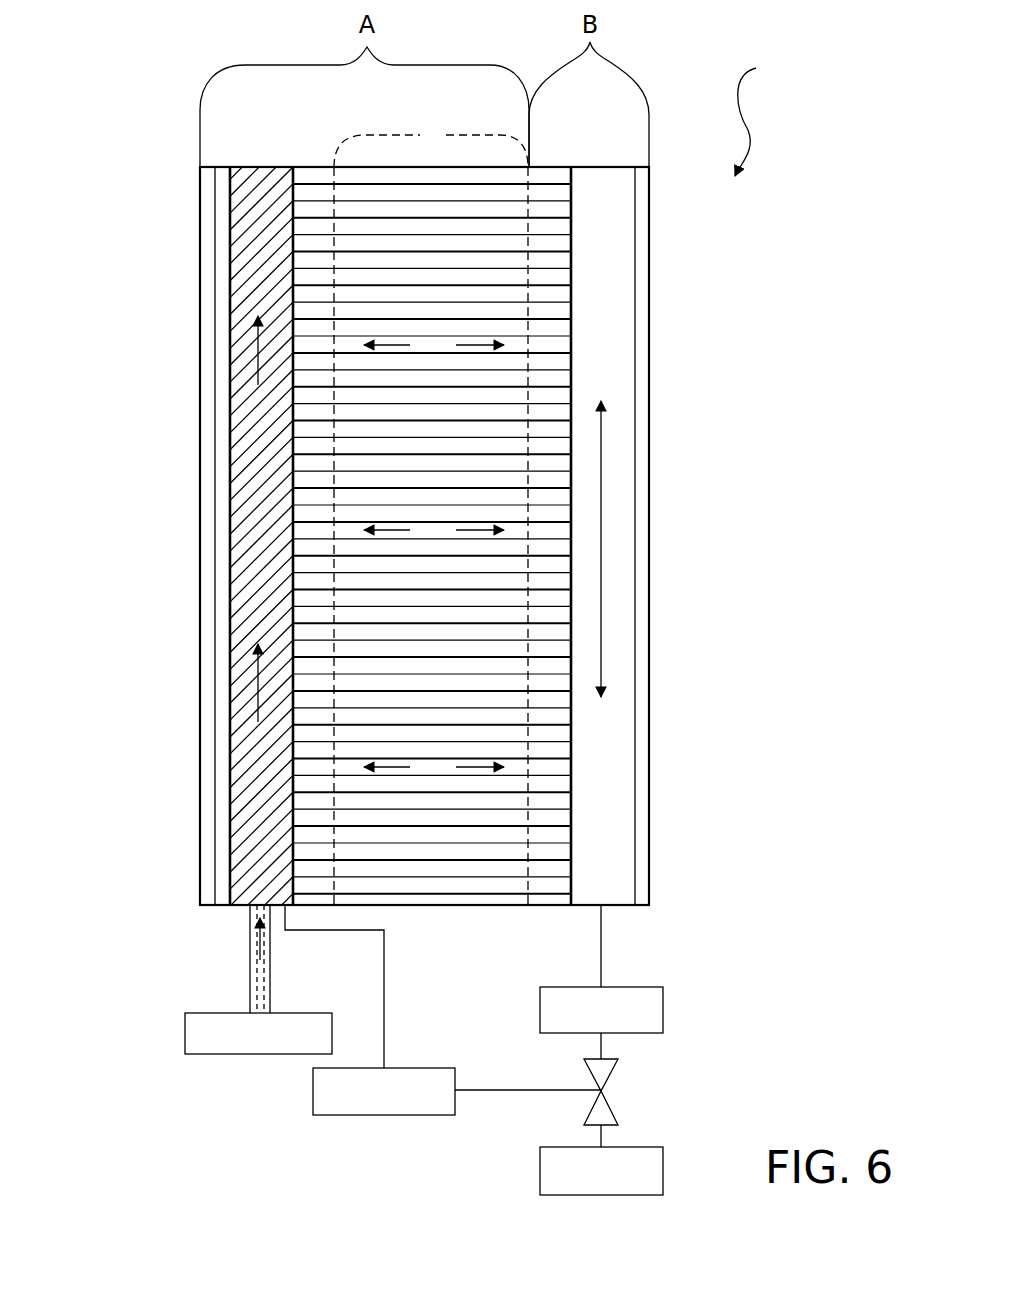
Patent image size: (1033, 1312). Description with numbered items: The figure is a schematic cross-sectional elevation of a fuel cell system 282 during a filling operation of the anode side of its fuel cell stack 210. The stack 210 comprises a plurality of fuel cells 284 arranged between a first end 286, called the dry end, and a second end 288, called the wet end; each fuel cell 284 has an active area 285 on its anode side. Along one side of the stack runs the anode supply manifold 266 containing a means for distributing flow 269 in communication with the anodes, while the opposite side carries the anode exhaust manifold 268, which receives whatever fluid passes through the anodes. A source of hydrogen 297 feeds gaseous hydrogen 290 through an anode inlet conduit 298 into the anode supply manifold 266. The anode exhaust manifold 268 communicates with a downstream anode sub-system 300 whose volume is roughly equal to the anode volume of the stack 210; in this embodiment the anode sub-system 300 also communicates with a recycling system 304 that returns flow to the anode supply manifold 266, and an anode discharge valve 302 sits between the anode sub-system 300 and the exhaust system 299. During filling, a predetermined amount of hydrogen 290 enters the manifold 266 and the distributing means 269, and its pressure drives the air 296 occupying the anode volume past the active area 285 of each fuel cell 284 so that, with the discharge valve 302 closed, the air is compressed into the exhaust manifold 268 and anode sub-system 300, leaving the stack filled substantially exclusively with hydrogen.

The fuel cell stack 210 is at (554, 160).
The anode supply manifold 266 is at (215, 814).
The anode exhaust manifold 268 is at (634, 754).
The means for distributing flow 269 is at (254, 474).
The fuel cell system 282 is at (779, 199).
The fuel cells 284 is at (298, 226).
The active area 285 is at (425, 135).
The first end 286 is at (375, 167).
The second end 288 is at (453, 905).
The gaseous hydrogen 290 is at (258, 985).
The air 296 is at (258, 348).
The source of hydrogen 297 is at (185, 1037).
The anode inlet conduit 298 is at (272, 975).
The exhaust system 299 is at (663, 1172).
The anode sub-system 300 is at (663, 1010).
The anode discharge valve 302 is at (603, 1092).
The recycling system 304 is at (313, 1090).